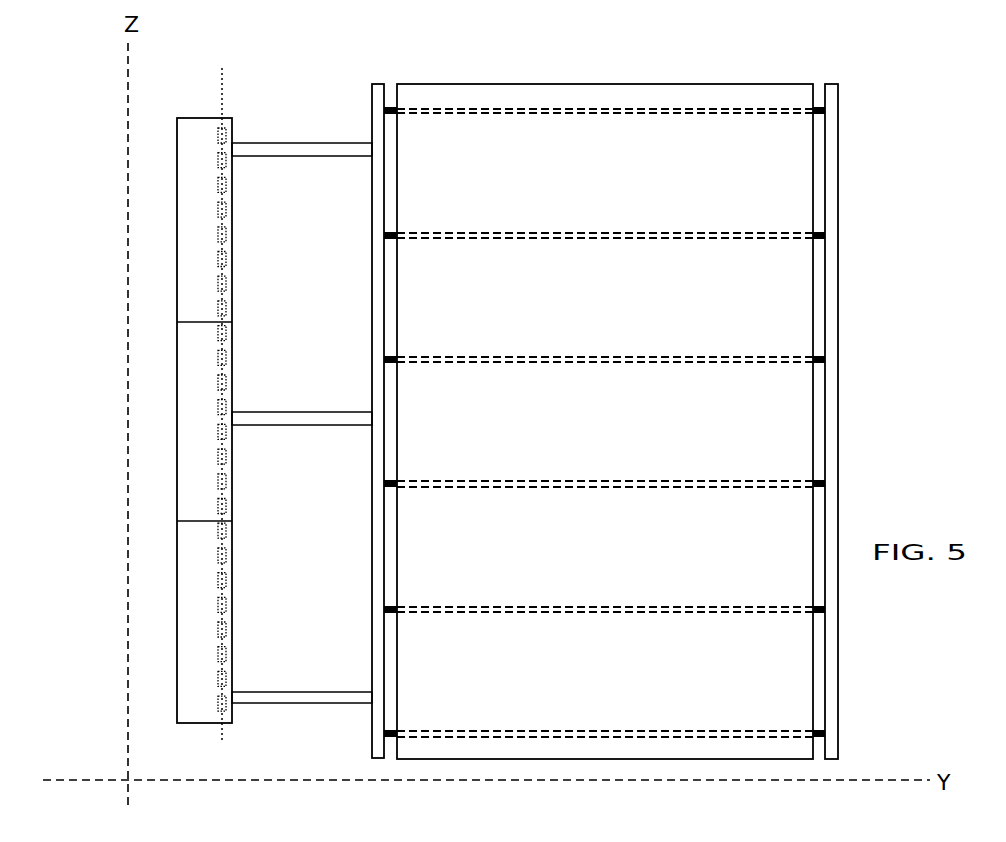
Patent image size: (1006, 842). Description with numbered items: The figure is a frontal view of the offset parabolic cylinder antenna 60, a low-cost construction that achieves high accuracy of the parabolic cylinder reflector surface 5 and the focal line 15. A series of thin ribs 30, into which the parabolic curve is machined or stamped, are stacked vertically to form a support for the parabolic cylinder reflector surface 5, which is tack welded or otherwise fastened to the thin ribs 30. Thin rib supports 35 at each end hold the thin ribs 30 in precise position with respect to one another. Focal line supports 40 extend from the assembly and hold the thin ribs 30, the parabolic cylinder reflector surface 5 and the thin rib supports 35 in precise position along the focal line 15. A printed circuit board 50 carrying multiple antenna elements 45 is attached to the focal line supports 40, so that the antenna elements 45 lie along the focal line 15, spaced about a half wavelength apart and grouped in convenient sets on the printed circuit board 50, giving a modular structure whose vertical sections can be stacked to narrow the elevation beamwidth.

The parabolic cylinder reflector surface 5 is at (503, 83).
The focal line 15 is at (223, 99).
The thin ribs 30 is at (635, 107).
The thin rib supports 35 is at (375, 83).
The focal line supports 40 is at (296, 157).
The antenna elements 45 is at (225, 285).
The printed circuit board 50 is at (177, 235).
The offset parabolic cylinder antenna 60 is at (894, 155).